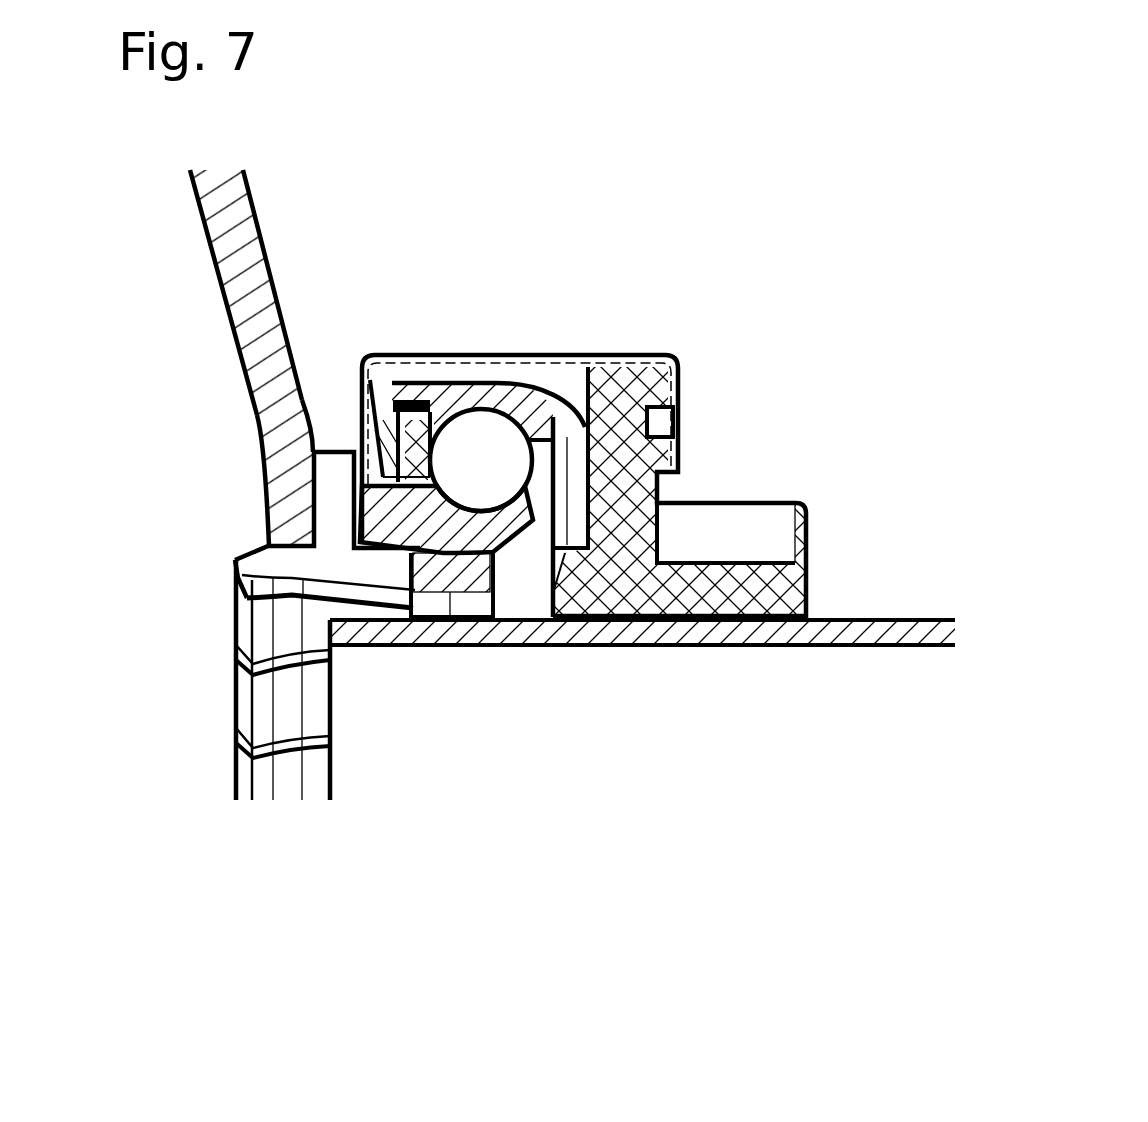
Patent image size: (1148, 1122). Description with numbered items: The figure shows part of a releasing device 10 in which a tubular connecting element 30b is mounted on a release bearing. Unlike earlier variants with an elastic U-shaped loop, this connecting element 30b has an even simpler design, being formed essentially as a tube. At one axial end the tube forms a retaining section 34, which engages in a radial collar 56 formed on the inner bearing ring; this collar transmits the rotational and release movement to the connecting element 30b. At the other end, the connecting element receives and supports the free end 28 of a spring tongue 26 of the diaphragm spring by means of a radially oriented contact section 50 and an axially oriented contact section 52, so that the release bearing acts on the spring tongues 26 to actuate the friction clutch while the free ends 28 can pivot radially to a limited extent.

The releasing device 10 is at (237, 546).
The spring tongues 26 is at (238, 262).
The free ends 28 is at (288, 528).
The connecting element 30b is at (296, 741).
The retaining section 34 is at (502, 647).
The radially oriented contact section 50 is at (328, 462).
The axially oriented contact section 52 is at (288, 558).
The radial collar 56 is at (548, 647).